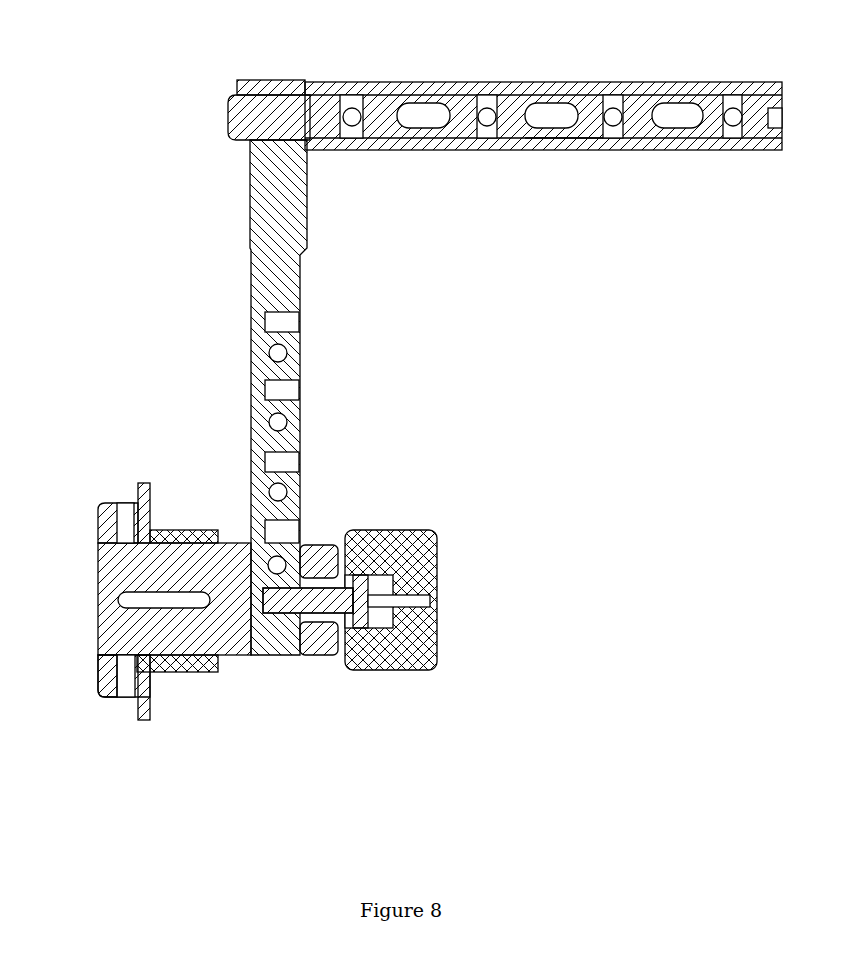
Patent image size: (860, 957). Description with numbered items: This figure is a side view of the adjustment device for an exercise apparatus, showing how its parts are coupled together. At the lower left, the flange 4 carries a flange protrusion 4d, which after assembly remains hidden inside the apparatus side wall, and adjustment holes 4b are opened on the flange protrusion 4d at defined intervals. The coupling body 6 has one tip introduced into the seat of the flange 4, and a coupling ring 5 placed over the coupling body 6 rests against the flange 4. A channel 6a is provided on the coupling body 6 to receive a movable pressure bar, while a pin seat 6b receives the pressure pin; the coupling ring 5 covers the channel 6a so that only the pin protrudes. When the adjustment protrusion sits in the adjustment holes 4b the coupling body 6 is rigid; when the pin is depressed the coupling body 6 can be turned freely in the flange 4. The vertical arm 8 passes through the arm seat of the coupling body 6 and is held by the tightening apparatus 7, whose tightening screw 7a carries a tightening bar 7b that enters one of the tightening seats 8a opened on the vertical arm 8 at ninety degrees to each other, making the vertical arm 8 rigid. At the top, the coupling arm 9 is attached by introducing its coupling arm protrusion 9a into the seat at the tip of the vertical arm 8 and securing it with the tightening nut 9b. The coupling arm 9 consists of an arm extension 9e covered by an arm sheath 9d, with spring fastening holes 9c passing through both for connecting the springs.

The flange 4 is at (143, 720).
The adjustment holes 4b is at (123, 697).
The flange protrusion 4d is at (107, 673).
The coupling ring 5 is at (183, 675).
The coupling body 6 is at (233, 660).
The channel 6a is at (140, 502).
The pin seat 6b is at (157, 598).
The tightening apparatus 7 is at (436, 536).
The tightening screw 7a is at (377, 672).
The tightening bar 7b is at (293, 650).
The vertical arm 8 is at (250, 236).
The tightening seats 8a is at (273, 358).
The coupling arm 9 is at (474, 82).
The coupling arm protrusion 9a is at (232, 108).
The tightening nut 9b is at (244, 82).
The spring fastening holes 9c is at (683, 120).
The arm sheath 9d is at (577, 140).
The arm extension 9e is at (502, 120).